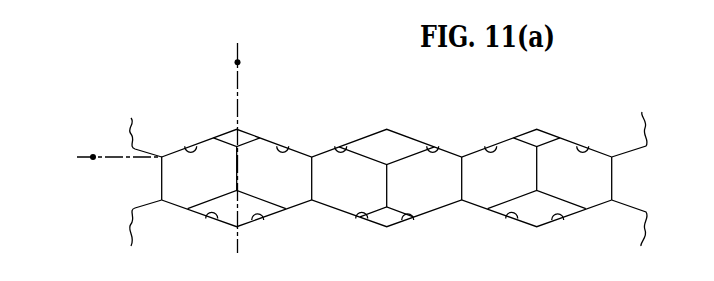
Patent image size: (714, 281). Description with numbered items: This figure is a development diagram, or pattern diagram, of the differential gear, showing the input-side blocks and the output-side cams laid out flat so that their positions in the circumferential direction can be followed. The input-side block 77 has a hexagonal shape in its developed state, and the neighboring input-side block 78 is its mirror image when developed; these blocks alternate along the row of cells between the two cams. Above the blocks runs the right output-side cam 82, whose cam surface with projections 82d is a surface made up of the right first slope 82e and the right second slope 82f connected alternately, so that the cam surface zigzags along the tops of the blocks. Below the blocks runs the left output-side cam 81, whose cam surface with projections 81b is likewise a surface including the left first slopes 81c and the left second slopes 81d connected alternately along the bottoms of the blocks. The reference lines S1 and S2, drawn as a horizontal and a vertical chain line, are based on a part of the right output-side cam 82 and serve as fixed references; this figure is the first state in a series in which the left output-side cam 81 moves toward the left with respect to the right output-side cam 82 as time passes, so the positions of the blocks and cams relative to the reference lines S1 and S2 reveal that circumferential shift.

The input-side block 77 is at (361, 177).
The input-side block 78 is at (387, 177).
The left output-side cam 81 is at (146, 236).
The cam surface with projections 81b is at (131, 206).
The left first slope 81c is at (205, 218).
The left second slope 81d is at (265, 218).
The right output-side cam 82 is at (149, 125).
The cam surface with projections 82d is at (128, 151).
The right first slope 82e is at (196, 145).
The right second slope 82f is at (277, 145).
The reference line S1 is at (94, 161).
The reference line S2 is at (240, 62).